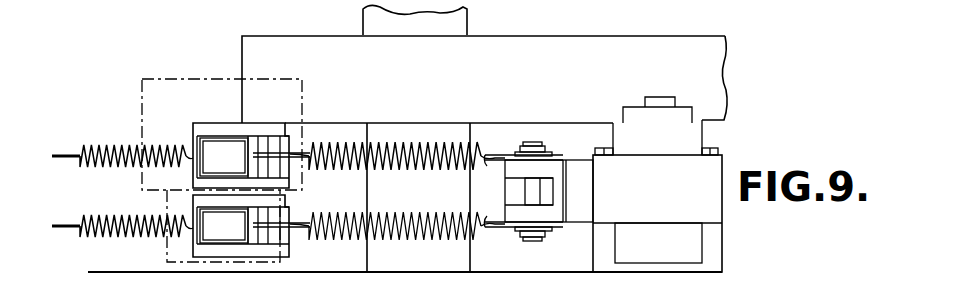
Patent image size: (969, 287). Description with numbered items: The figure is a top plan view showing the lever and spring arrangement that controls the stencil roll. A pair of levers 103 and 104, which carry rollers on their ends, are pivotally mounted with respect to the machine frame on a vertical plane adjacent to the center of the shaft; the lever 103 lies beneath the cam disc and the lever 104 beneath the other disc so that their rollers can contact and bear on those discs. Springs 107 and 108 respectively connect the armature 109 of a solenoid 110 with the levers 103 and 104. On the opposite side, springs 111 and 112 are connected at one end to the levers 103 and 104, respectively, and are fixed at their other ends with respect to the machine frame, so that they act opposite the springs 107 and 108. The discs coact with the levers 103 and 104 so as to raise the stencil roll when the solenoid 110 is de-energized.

The lever 103 is at (255, 216).
The lever 104 is at (251, 150).
The spring 107 is at (448, 195).
The spring 108 is at (422, 144).
The armature 109 is at (577, 158).
The solenoid 110 is at (674, 202).
The spring 111 is at (105, 214).
The spring 112 is at (118, 144).